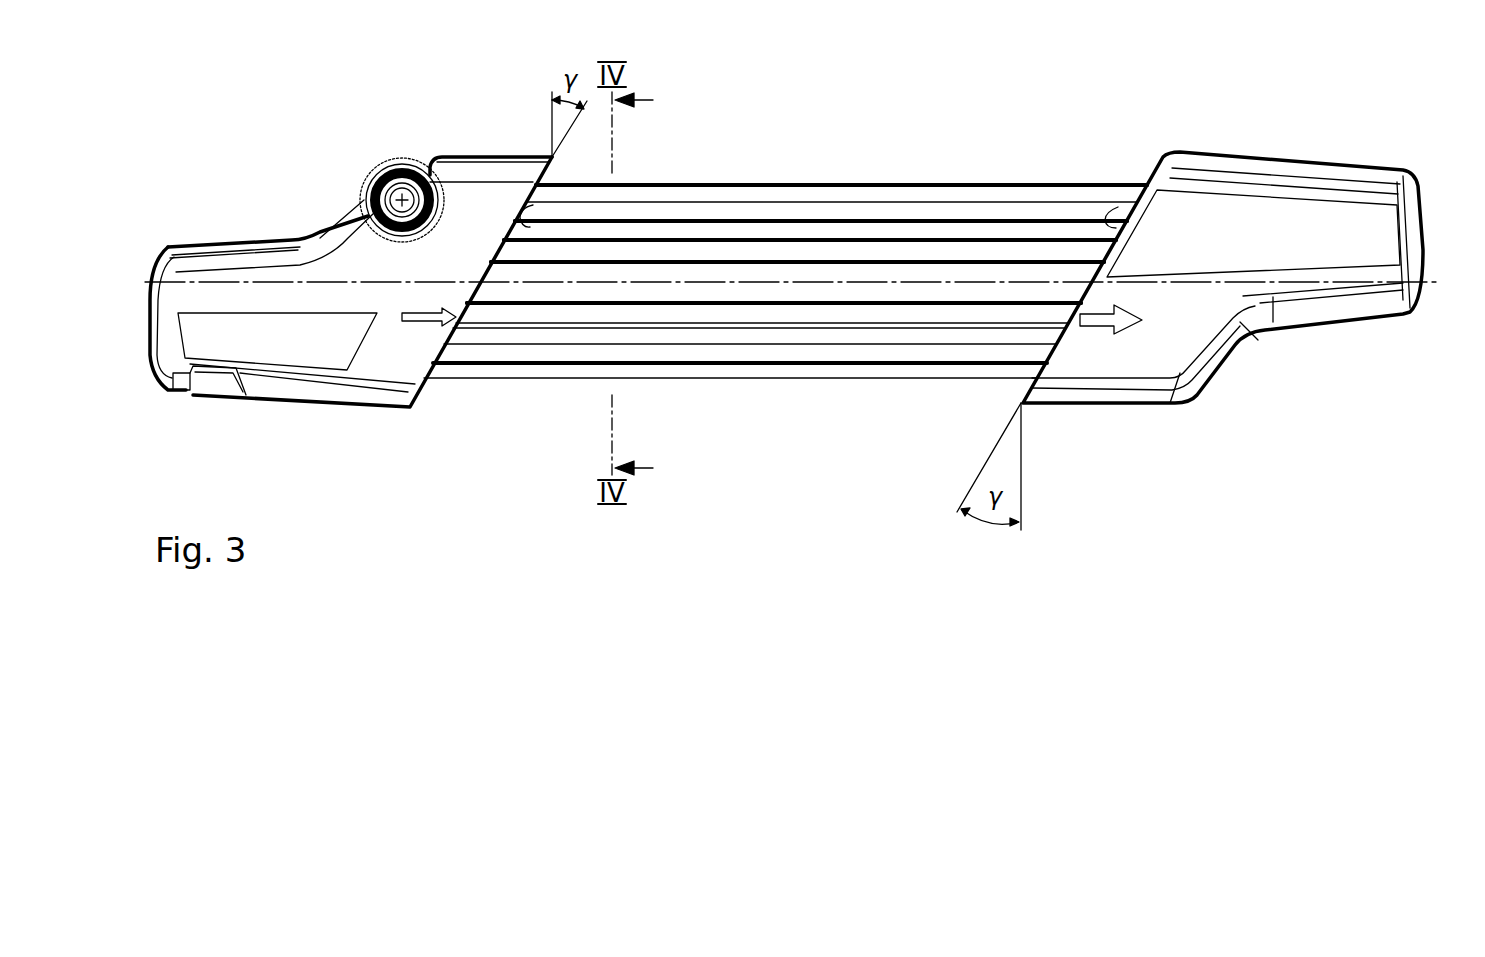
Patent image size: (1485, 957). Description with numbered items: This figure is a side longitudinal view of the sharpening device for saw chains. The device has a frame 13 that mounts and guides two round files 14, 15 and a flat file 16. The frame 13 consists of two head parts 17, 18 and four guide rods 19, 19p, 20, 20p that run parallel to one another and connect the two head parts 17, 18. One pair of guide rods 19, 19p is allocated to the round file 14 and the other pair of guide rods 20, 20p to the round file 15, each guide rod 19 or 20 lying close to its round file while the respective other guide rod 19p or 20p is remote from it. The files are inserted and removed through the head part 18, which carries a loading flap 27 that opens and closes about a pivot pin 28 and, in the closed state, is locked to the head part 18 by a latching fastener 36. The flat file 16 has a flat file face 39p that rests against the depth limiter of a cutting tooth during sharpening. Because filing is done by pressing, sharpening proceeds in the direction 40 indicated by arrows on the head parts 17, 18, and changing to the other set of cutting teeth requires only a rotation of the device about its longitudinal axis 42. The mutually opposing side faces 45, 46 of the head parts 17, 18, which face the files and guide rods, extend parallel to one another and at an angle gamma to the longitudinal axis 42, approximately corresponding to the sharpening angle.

The frame 13 is at (826, 170).
The round file 14 is at (708, 314).
The round file 15 is at (900, 248).
The flat file 16 is at (851, 305).
The head part 17 is at (1330, 314).
The head part 18 is at (303, 395).
The guide rod 19 is at (527, 338).
The guide rod 19p is at (692, 188).
The guide rod 20 is at (758, 232).
The guide rod 20p is at (478, 372).
The loading flap 27 is at (255, 248).
The pivot pin 28 is at (404, 197).
The latching fastener 36 is at (178, 393).
The flat file face 39p is at (890, 296).
The direction 40 is at (418, 324).
The longitudinal axis 42 is at (999, 283).
The side face 45 is at (1120, 228).
The side face 46 is at (531, 195).